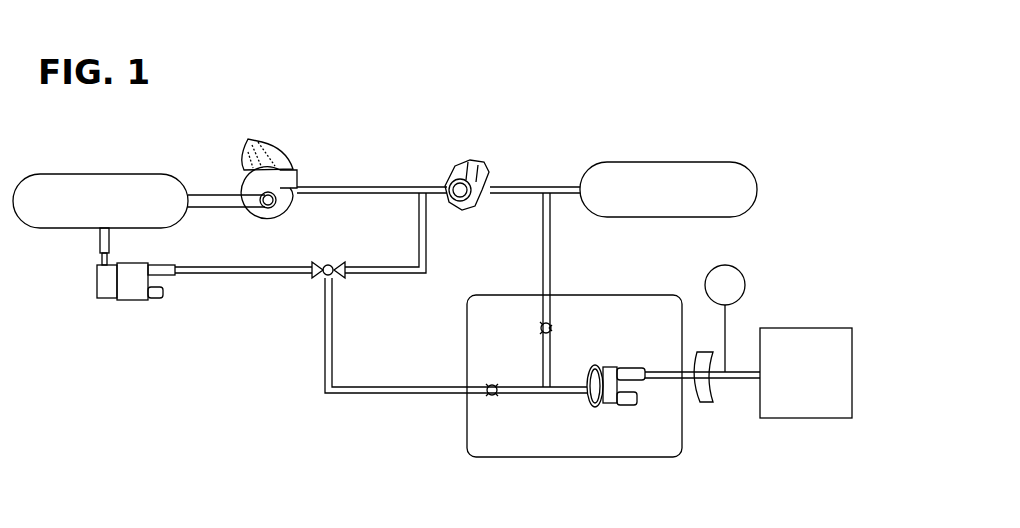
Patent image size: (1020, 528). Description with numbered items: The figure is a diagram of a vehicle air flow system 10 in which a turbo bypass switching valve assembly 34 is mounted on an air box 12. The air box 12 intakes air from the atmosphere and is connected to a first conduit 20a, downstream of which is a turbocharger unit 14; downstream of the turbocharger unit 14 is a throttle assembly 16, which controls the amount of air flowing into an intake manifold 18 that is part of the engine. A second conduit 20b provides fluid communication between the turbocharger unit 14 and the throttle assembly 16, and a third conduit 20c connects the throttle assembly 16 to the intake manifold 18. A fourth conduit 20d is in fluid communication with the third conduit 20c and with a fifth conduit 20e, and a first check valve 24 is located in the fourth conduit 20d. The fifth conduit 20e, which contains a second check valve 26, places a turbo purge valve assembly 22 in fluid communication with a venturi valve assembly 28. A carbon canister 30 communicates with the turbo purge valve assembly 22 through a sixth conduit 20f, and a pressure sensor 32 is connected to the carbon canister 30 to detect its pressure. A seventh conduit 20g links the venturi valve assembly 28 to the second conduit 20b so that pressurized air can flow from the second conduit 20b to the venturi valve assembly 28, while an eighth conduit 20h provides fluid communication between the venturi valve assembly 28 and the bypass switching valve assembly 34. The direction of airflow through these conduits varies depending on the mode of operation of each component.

The air flow system 10 is at (220, 392).
The air box 12 is at (75, 174).
The turbocharger unit 14 is at (265, 170).
The throttle assembly 16 is at (455, 168).
The intake manifold 18 is at (705, 162).
The first conduit 20a is at (213, 195).
The second conduit 20b is at (400, 187).
The third conduit 20c is at (540, 187).
The fourth conduit 20d is at (551, 240).
The fifth conduit 20e is at (378, 387).
The sixth conduit 20f is at (660, 372).
The seventh conduit 20g is at (428, 240).
The eighth conduit 20h is at (200, 267).
The turbo purge valve assembly 22 is at (648, 407).
The first check valve 24 is at (553, 330).
The second check valve 26 is at (496, 384).
The venturi valve assembly 28 is at (318, 278).
The carbon canister 30 is at (808, 328).
The pressure sensor 32 is at (728, 265).
The bypass switching valve assembly 34 is at (100, 314).